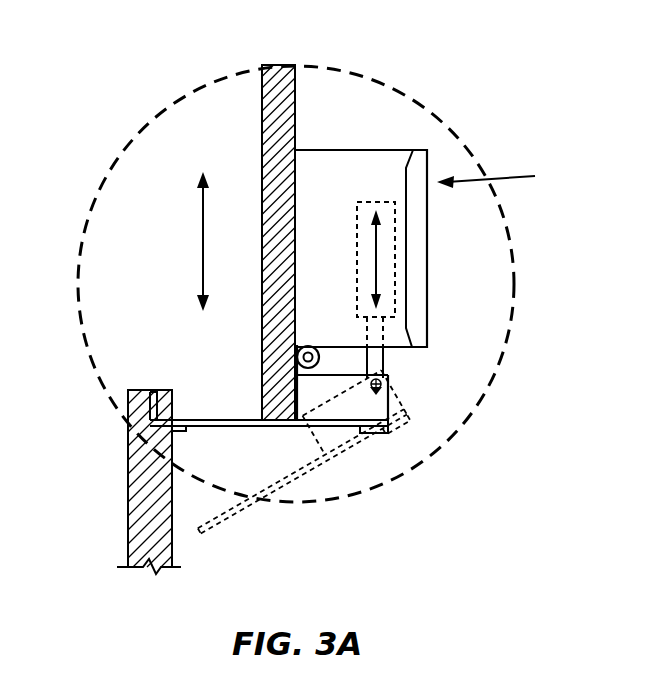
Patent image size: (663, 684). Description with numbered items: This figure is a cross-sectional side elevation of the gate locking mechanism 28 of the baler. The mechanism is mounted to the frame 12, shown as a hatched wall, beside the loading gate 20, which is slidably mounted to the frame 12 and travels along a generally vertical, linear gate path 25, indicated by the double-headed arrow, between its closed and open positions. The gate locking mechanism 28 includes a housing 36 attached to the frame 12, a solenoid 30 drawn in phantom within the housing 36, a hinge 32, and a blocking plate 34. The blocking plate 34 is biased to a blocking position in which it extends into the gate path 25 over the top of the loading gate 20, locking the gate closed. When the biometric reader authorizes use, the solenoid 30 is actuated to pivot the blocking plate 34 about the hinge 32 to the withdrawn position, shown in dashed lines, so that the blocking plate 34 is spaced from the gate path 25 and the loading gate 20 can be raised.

The frame 12 is at (274, 108).
The loading gate 20 is at (128, 490).
The gate path 25 is at (203, 250).
The gate locking mechanism 28 is at (504, 181).
The solenoid 30 is at (400, 256).
The hinge 32 is at (299, 358).
The blocking plate 34 is at (244, 420).
The housing 36 is at (343, 167).